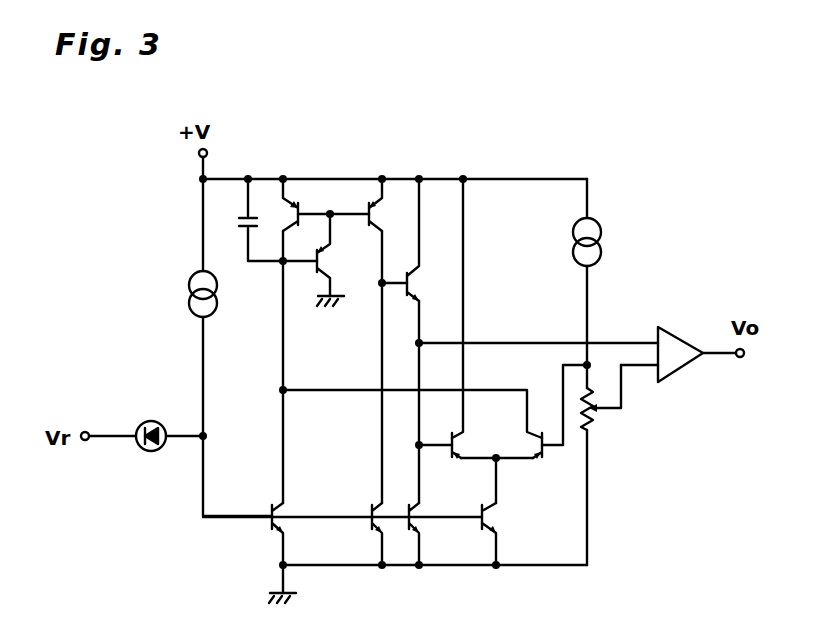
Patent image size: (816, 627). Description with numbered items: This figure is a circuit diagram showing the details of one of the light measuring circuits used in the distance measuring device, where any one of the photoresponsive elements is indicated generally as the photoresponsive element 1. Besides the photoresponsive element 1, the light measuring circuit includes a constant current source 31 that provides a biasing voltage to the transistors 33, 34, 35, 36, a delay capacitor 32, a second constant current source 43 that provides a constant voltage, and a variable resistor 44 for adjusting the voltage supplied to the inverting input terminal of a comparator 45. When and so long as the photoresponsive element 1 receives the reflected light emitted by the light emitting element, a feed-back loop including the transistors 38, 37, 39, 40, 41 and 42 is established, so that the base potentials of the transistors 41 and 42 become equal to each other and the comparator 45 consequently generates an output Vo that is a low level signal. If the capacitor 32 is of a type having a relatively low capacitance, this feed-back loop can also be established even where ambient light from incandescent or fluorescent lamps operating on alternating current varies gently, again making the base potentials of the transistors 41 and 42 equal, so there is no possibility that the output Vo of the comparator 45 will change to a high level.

The photoresponsive element 1 is at (150, 452).
The constant current source 31 is at (190, 300).
The delay capacitor 32 is at (240, 220).
The transistor 33 is at (268, 522).
The transistor 34 is at (370, 524).
The transistor 35 is at (412, 524).
The transistor 36 is at (486, 524).
The transistor 37 is at (292, 205).
The transistor 38 is at (316, 275).
The transistor 39 is at (380, 212).
The transistor 40 is at (413, 292).
The transistor 41 is at (457, 462).
The transistor 42 is at (537, 462).
The constant current source 43 is at (602, 248).
The variable resistor 44 is at (594, 420).
The comparator 45 is at (683, 370).